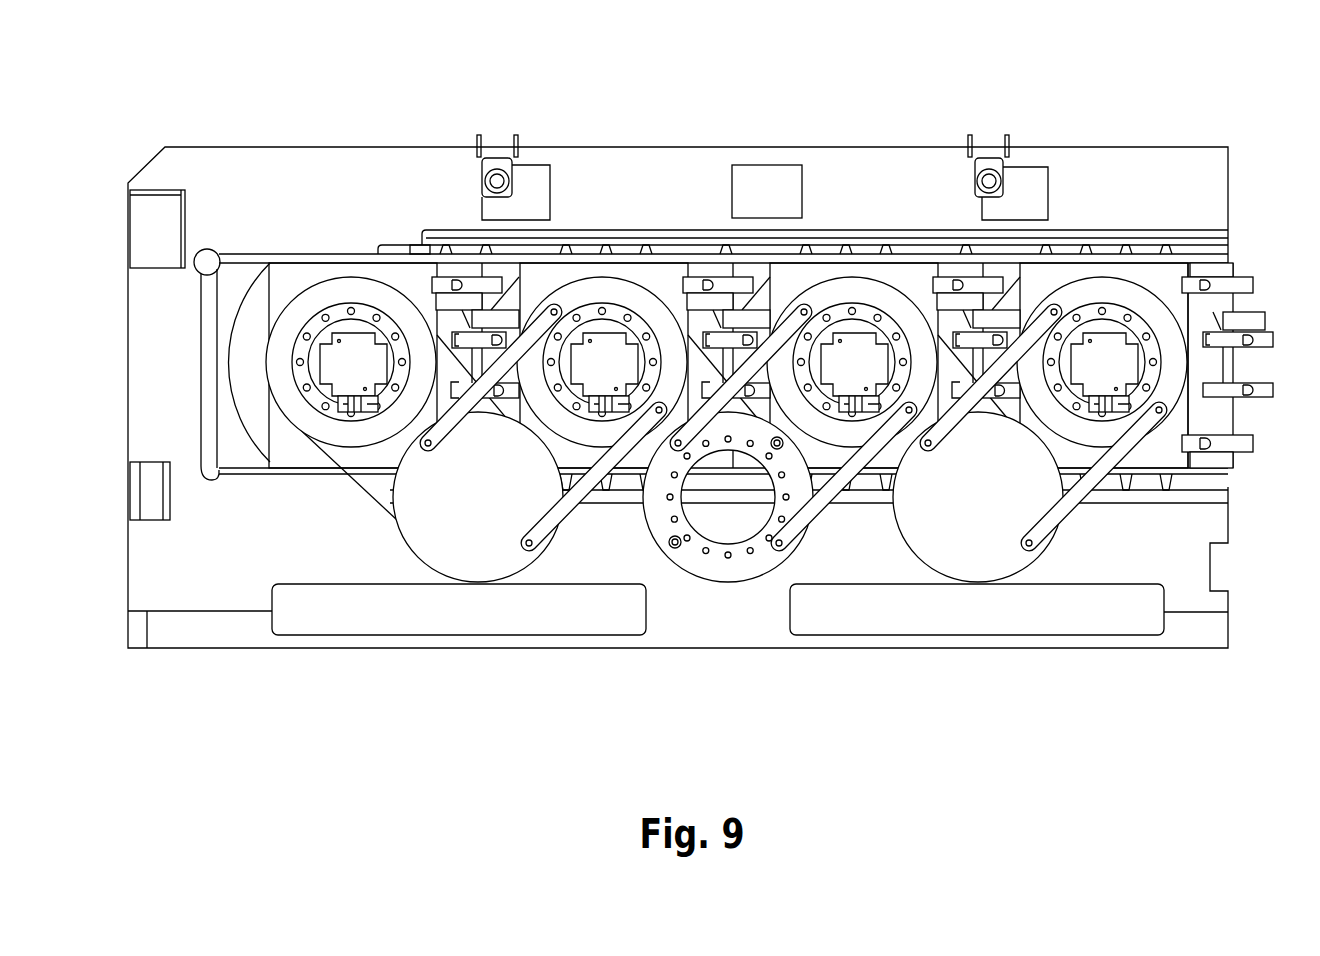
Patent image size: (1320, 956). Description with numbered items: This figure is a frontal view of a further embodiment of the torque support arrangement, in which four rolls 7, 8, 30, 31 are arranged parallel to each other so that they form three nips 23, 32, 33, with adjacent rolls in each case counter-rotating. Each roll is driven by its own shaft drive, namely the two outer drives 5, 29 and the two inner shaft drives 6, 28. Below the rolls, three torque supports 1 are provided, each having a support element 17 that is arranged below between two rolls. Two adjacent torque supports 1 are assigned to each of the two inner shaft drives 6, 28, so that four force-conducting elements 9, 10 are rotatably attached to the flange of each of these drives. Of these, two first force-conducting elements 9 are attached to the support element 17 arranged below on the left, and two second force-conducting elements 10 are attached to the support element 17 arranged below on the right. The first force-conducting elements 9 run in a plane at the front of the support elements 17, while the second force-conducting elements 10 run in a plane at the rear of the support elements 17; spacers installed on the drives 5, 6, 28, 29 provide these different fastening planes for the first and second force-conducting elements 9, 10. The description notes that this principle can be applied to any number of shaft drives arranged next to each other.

The torque support 1 is at (405, 728).
The drive 5 is at (1100, 350).
The shaft drive 6 is at (851, 350).
The roll 7 is at (1092, 88).
The roll 8 is at (816, 88).
The first force-conducting element 9 is at (597, 497).
The second force-conducting element 10 is at (373, 487).
The support element 17 is at (473, 542).
The nip 23 is at (993, 117).
The shaft drive 28 is at (603, 350).
The drive 29 is at (353, 350).
The roll 30 is at (590, 117).
The roll 31 is at (317, 117).
The nip 32 is at (718, 117).
The nip 33 is at (472, 117).